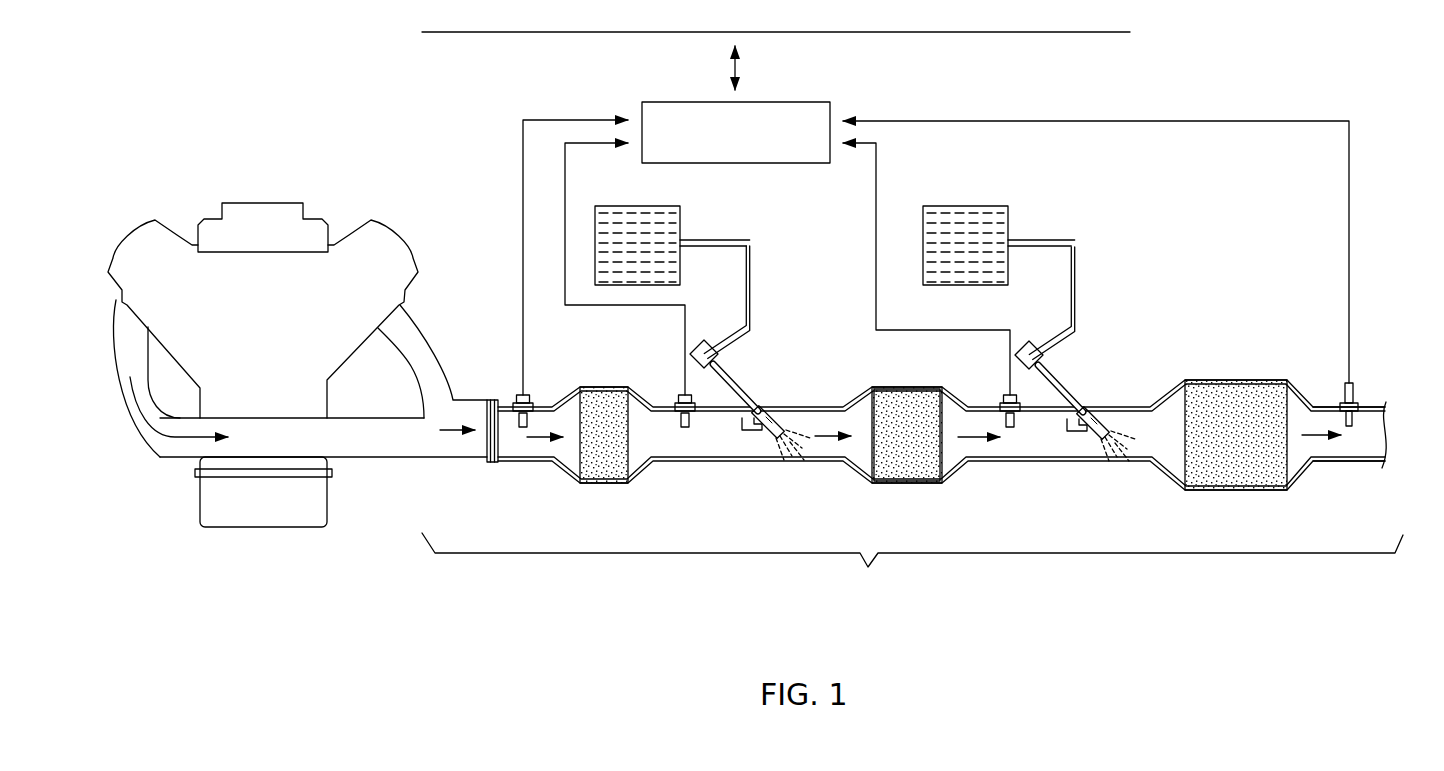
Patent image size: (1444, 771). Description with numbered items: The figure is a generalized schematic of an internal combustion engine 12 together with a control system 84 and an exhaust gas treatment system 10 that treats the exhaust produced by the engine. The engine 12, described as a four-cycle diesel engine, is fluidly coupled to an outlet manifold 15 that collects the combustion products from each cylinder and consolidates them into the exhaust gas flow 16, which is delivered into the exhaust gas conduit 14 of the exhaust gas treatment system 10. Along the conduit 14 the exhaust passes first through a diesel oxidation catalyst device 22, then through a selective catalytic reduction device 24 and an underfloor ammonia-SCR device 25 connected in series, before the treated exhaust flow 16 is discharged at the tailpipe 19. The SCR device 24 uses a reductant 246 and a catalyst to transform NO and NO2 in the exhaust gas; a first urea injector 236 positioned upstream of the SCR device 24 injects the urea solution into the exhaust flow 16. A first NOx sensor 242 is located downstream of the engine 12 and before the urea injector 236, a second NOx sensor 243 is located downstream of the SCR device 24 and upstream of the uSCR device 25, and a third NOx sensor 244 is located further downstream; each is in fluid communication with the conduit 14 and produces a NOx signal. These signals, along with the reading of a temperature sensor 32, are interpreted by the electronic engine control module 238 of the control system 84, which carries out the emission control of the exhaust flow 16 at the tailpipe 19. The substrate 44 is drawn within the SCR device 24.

The exhaust gas treatment system 10 is at (912, 564).
The internal combustion engine 12 is at (125, 230).
The exhaust gas conduit 14 is at (540, 461).
The outlet manifold 15 is at (408, 317).
The exhaust gas flow 16 is at (160, 433).
The tailpipe 19 is at (1362, 448).
The diesel oxidation catalyst device 22 is at (603, 377).
The selective catalytic reduction device 24 is at (890, 373).
The underfloor ammonia-SCR device 25 is at (1225, 368).
The temperature sensor 32 is at (516, 394).
The catalyst substrate 44 is at (895, 482).
The control system 84 is at (460, 117).
The first urea injector 236 is at (743, 387).
The electronic engine control module 238 is at (673, 100).
The first NOx sensor 242 is at (683, 393).
The second NOx sensor 243 is at (876, 270).
The third NOx sensor 244 is at (1343, 387).
The reductant 246 is at (680, 218).